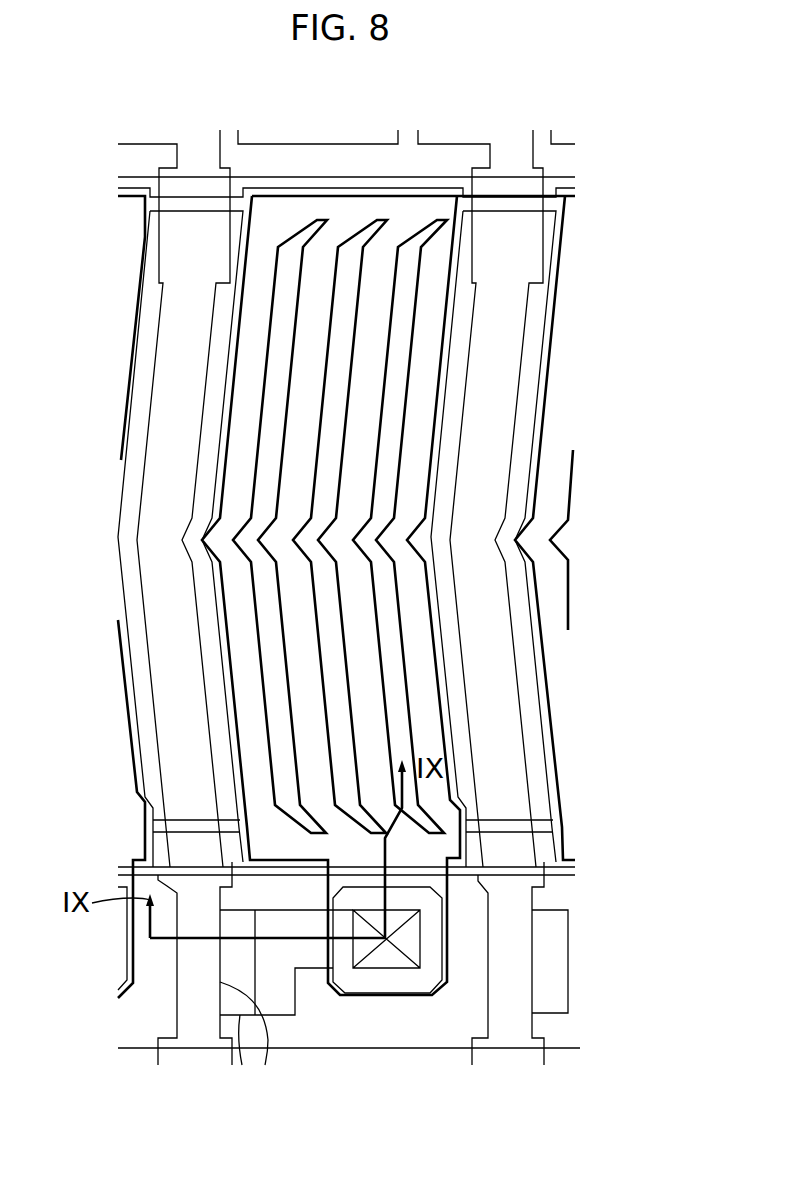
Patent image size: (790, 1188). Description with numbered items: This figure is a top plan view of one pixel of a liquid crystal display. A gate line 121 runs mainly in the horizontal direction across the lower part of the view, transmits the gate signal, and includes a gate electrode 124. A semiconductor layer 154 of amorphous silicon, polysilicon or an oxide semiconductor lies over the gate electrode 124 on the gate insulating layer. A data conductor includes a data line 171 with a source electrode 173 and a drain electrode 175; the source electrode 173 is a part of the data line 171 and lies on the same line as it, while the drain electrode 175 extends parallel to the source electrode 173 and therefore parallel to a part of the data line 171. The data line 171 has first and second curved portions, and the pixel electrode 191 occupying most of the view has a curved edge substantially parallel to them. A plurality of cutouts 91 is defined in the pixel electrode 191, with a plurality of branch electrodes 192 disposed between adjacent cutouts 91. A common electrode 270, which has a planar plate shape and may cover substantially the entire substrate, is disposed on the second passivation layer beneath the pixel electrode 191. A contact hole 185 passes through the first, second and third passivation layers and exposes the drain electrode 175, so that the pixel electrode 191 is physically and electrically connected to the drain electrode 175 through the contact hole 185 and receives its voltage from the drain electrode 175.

The cutouts 91 is at (347, 418).
The gate line 121 is at (430, 1040).
The gate electrode 124 is at (157, 970).
The semiconductor layer 154 is at (243, 1050).
The data line 171 is at (138, 581).
The source electrode 173 is at (267, 1040).
The drain electrode 175 is at (293, 1040).
The contact hole 185 is at (373, 968).
The pixel electrode 191 is at (503, 827).
The branch electrodes 192 is at (350, 690).
The common electrode 270 is at (440, 467).